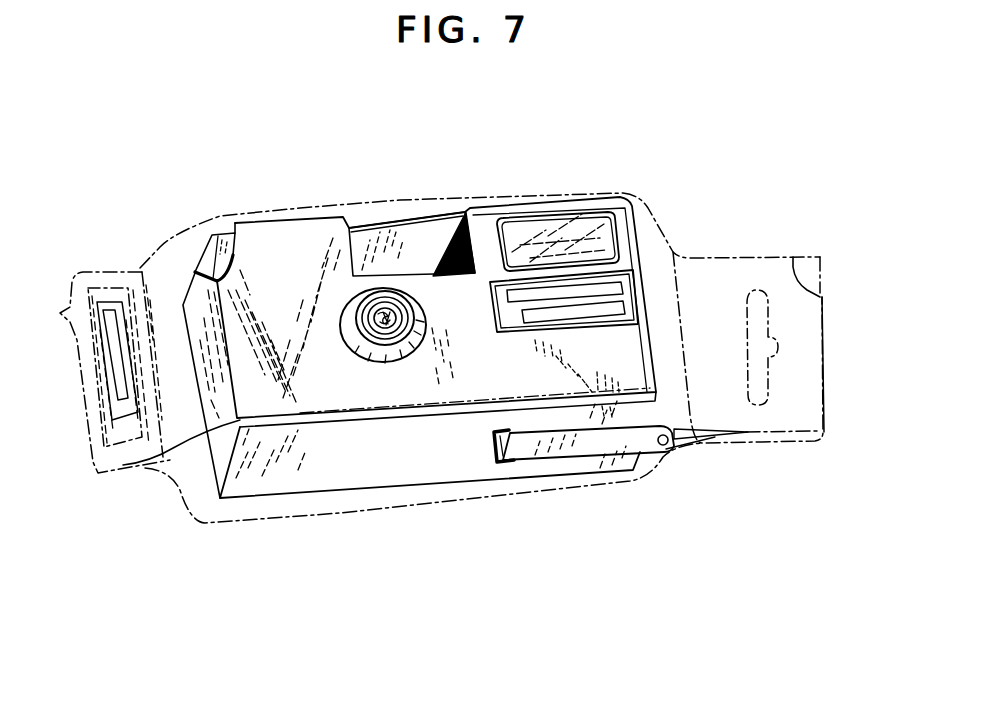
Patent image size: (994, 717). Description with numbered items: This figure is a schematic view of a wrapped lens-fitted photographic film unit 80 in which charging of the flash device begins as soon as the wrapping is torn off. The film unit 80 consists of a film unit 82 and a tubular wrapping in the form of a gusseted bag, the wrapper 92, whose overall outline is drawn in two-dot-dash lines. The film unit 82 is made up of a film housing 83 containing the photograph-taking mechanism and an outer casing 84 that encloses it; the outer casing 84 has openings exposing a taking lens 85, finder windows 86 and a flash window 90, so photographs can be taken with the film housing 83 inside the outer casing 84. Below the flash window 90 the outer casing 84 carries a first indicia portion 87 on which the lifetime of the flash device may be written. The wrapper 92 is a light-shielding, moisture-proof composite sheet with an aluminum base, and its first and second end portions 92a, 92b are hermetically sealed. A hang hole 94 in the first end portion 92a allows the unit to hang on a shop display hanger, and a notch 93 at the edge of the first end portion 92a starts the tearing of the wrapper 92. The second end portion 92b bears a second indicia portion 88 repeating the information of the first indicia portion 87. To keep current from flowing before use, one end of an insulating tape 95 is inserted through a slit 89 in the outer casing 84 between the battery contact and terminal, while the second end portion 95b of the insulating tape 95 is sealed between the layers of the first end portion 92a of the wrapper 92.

The lens-fitted photographic film unit 80 is at (178, 178).
The film unit 82 is at (310, 130).
The film housing 83 is at (222, 232).
The outer casing 84 is at (285, 233).
The taking lens 85 is at (400, 318).
The finder windows 86 is at (399, 246).
The first indicia portion 87 is at (503, 330).
The second indicia portion 88 is at (138, 447).
The slit 89 is at (495, 432).
The flash window 90 is at (546, 234).
The wrapper 92 is at (373, 513).
The first end portion 92a is at (792, 401).
The second end portion 92b is at (108, 270).
The notch 93 is at (793, 257).
The hang hole 94 is at (750, 343).
The insulating tape 95 is at (575, 452).
The second end portion 95b is at (738, 444).